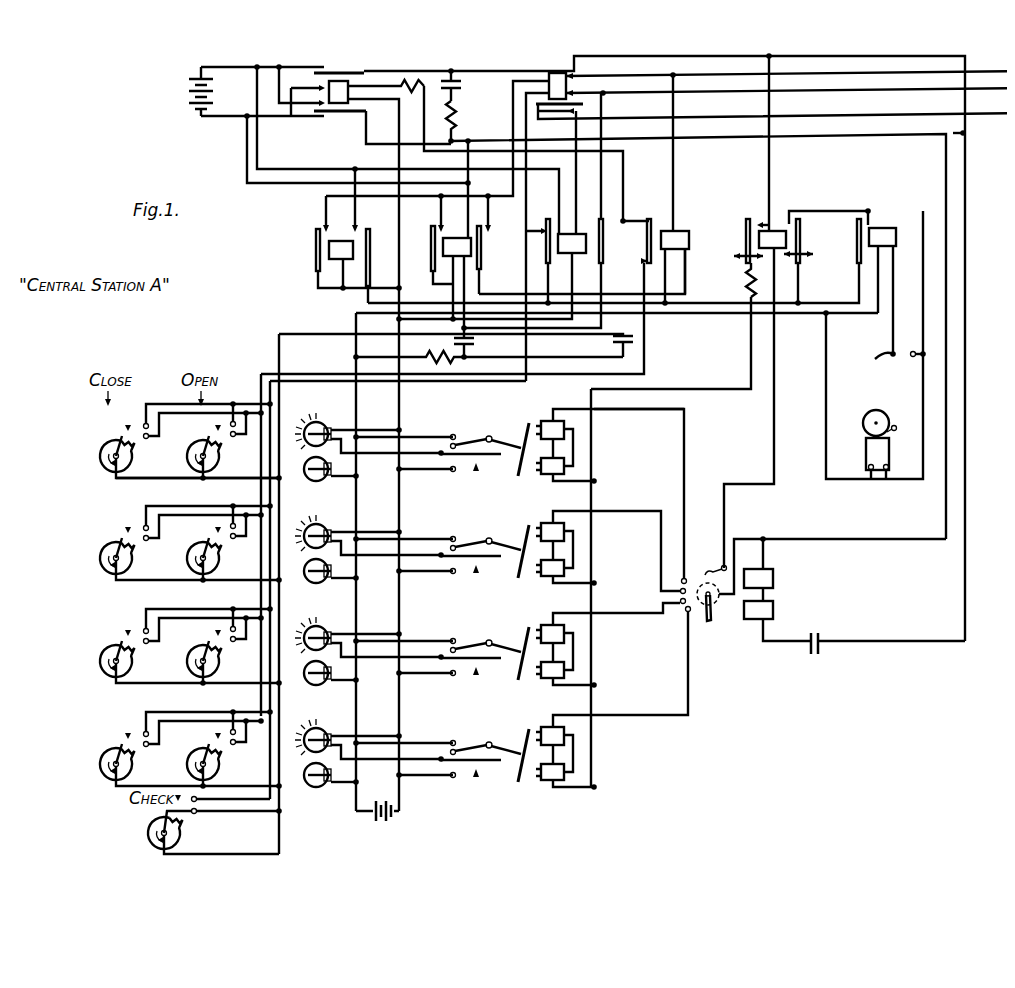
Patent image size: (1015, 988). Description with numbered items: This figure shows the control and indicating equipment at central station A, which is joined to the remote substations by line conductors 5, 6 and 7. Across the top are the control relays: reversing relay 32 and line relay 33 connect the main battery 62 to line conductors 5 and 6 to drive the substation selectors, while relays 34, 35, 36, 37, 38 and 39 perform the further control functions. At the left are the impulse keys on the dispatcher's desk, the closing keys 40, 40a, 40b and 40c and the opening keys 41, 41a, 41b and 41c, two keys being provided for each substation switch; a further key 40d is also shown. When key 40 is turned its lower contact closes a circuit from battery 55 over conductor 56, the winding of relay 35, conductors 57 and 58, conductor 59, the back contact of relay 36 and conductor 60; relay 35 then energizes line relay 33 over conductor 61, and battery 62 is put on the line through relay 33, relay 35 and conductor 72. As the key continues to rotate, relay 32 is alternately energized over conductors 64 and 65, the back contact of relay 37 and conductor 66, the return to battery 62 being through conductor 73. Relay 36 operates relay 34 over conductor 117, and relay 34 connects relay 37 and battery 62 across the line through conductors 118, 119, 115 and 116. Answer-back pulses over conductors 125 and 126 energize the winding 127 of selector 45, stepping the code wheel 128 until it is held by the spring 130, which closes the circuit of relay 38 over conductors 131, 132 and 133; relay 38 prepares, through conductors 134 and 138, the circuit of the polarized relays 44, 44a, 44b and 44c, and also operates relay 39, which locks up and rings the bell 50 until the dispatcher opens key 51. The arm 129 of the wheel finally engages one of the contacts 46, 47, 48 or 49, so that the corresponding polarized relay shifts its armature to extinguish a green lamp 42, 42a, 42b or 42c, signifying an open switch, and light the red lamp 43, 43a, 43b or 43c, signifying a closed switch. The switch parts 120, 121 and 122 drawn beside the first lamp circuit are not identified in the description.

The line conductor 5 is at (995, 69).
The line conductor 6 is at (995, 88).
The line conductor 7 is at (995, 113).
The reversing relay 32 is at (338, 104).
The line relay 33 is at (546, 86).
The control relay 34 is at (328, 249).
The control relay 35 is at (472, 245).
The relay 36 is at (568, 253).
The control relay 37 is at (676, 232).
The control relay 38 is at (775, 228).
The relay 39 is at (882, 226).
The impulse sender key 40 is at (98, 456).
The impulse key 40a is at (98, 558).
The impulse key 40b is at (98, 660).
The impulse key 40c is at (98, 763).
The check switch 40d is at (146, 833).
The impulse sender key 41 is at (186, 456).
The impulse key 41a is at (186, 558).
The impulse key 41b is at (186, 660).
The impulse key 41c is at (186, 763).
The green lamp 42 is at (328, 414).
The green lamp 42a is at (328, 516).
The green lamp 42b is at (328, 618).
The green lamp 42c is at (322, 730).
The red lamp 43 is at (306, 480).
The red lamp 43a is at (306, 582).
The red lamp 43b is at (306, 684).
The red lamp 43c is at (306, 786).
The polarized relay 44 is at (550, 418).
The polarized relay 44a is at (551, 520).
The polarized relay 44b is at (551, 622).
The polarized relay 44c is at (551, 724).
The selector 45 is at (758, 536).
The contact 46 is at (679, 580).
The contact 47 is at (679, 591).
The contact 48 is at (679, 603).
The contact 49 is at (686, 612).
The bell 50 is at (865, 445).
The key 51 is at (882, 352).
The battery 55 is at (388, 818).
The conductor 56 is at (399, 600).
The conductor 57 is at (280, 332).
The conductor 58 is at (146, 478).
The conductor 59 is at (260, 374).
The conductor 60 is at (355, 312).
The conductor 61 is at (512, 182).
The main battery 62 is at (186, 100).
The conductor 64 is at (398, 252).
The conductor 65 is at (622, 184).
The conductor 66 is at (645, 362).
The conductor 72 is at (601, 160).
The conductor 73 is at (365, 143).
The conductor 115 is at (428, 166).
The conductor 116 is at (272, 184).
The conductor 117 is at (434, 210).
The conductor 118 is at (673, 184).
The conductor 119 is at (690, 285).
The switch blade 120 is at (515, 470).
The switch pivot 121 is at (486, 433).
The contact 122 is at (476, 474).
The conductor 125 is at (872, 57).
The conductor 126 is at (828, 135).
The winding 127 is at (773, 610).
The code wheel 128 is at (711, 605).
The arm 129 is at (707, 621).
The spring 130 is at (711, 562).
The conductor 131 is at (767, 156).
The conductor 132 is at (774, 410).
The conductor 133 is at (762, 536).
The conductor 134 is at (726, 390).
The conductor 138 is at (653, 409).